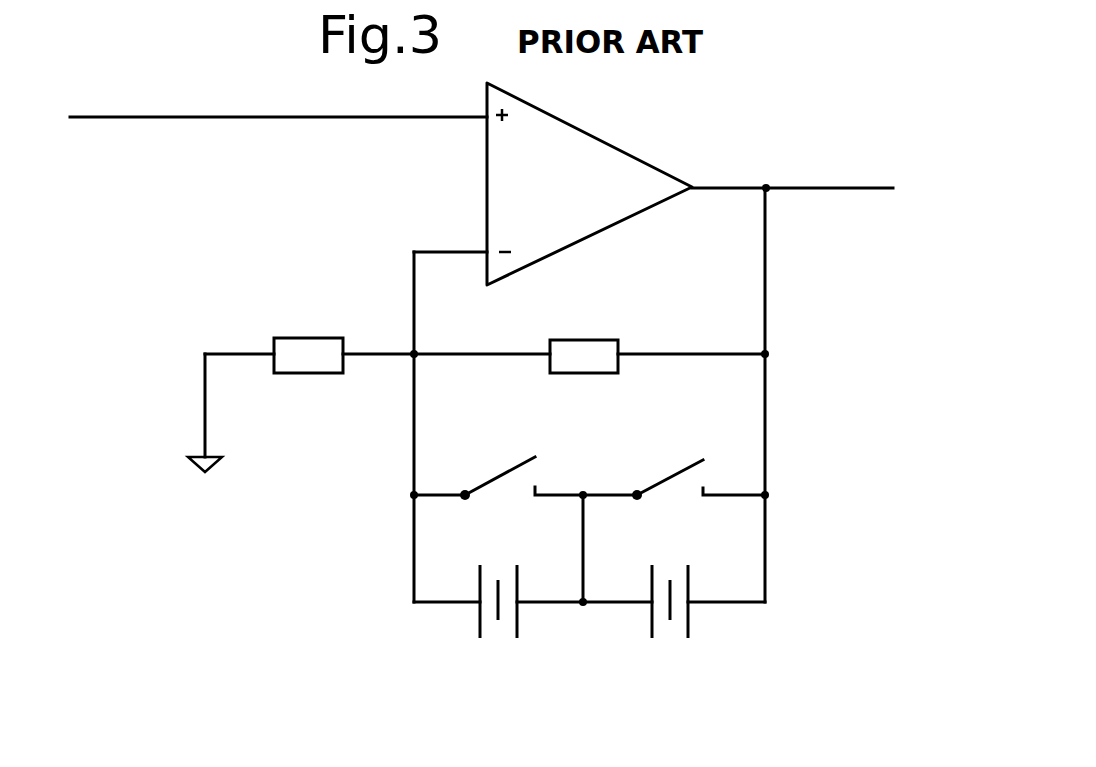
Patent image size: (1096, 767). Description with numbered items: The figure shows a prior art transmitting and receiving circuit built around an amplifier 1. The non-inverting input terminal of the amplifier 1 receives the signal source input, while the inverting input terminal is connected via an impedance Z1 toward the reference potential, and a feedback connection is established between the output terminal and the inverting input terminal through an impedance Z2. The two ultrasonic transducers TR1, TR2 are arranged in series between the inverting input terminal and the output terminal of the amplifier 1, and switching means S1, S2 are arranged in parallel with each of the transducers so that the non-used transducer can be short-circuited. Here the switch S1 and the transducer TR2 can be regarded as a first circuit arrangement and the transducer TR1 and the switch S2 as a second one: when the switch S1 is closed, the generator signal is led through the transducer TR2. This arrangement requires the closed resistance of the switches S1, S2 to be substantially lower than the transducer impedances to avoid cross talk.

The amplifier 1 is at (563, 203).
The impedance Z1 is at (308, 327).
The impedance Z2 is at (584, 329).
The switch S1 is at (498, 454).
The switch S2 is at (674, 454).
The ultrasonic transducer TR1 is at (496, 627).
The ultrasonic transducer TR2 is at (670, 627).